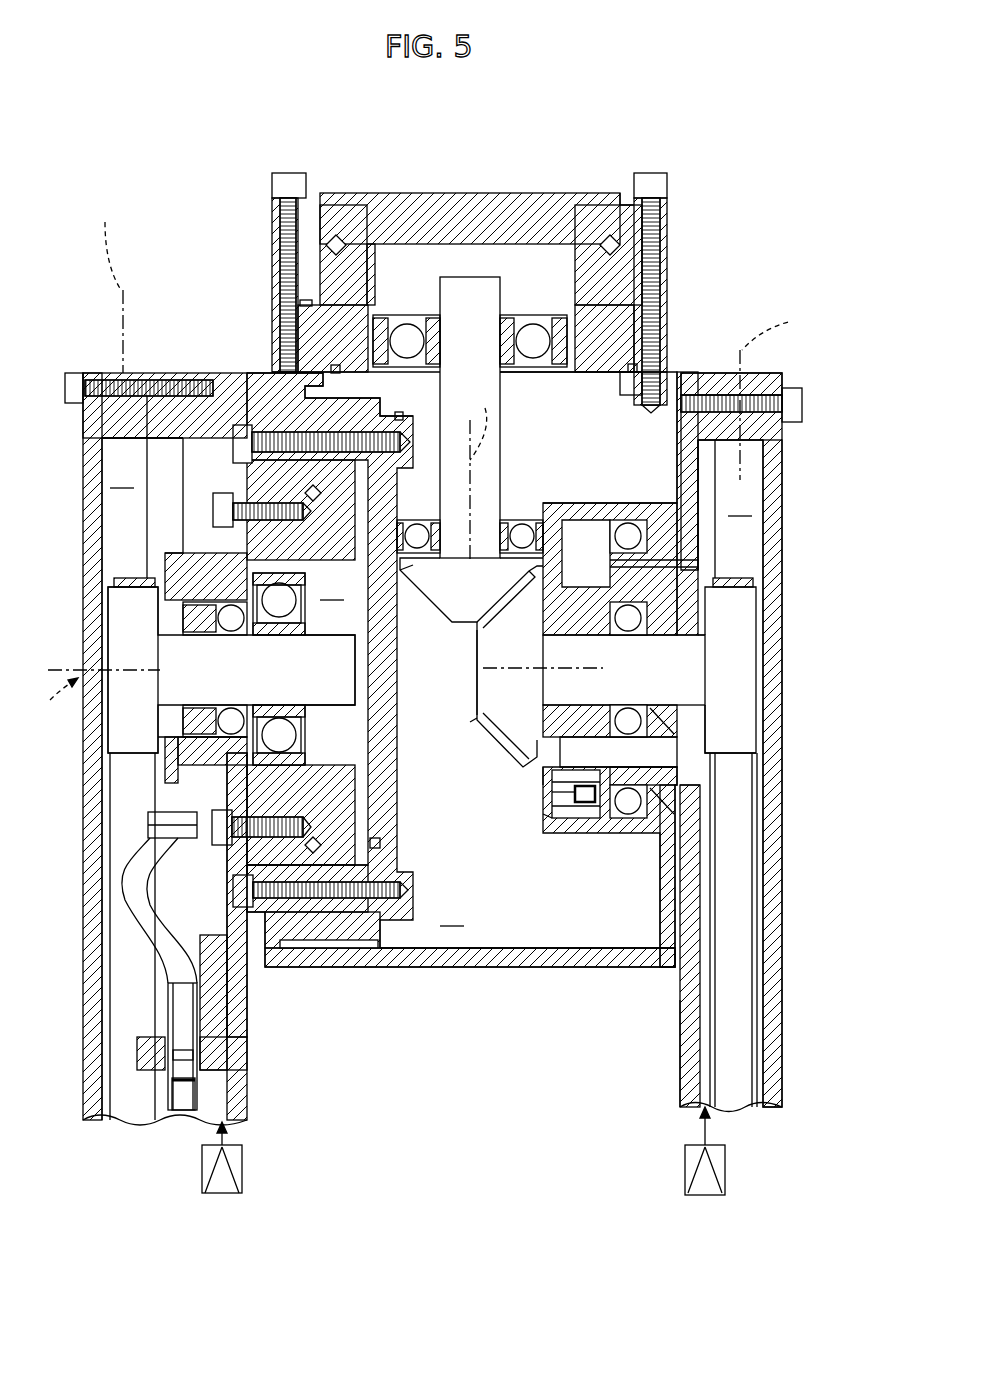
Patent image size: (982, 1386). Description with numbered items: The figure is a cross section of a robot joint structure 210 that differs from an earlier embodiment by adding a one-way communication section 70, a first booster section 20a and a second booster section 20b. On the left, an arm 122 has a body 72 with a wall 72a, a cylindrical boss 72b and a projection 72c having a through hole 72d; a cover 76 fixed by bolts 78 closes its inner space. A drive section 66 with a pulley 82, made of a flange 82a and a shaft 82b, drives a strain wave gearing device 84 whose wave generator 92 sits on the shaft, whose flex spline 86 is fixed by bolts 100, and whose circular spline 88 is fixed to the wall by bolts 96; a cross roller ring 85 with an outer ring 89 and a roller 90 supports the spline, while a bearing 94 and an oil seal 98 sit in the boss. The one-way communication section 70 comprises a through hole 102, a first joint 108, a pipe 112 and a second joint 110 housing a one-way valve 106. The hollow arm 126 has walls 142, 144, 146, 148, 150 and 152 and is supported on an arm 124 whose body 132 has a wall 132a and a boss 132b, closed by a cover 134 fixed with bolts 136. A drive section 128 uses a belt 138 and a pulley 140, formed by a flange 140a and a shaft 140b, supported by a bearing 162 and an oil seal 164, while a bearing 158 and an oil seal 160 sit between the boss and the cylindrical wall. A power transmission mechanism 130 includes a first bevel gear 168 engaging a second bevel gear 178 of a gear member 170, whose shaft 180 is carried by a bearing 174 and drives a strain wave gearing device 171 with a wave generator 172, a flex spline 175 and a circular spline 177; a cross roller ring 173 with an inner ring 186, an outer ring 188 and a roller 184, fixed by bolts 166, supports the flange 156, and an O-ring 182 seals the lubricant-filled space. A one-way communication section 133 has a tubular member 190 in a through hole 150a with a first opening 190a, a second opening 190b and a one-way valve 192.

The joint structure 210 is at (435, 643).
The flange 156 is at (446, 215).
The cross roller ring 173 is at (610, 203).
The bolts 166 is at (288, 178).
The roller 184 is at (285, 235).
The inner ring 186 is at (333, 205).
The outer ring 188 is at (640, 270).
The flex spline 175 is at (374, 300).
The circular spline 177 is at (625, 310).
The strain wave gearing device 171 is at (416, 313).
The wave generator 172 is at (540, 313).
The shaft 180 is at (470, 417).
The bearing 174 is at (417, 530).
The gear member 170 is at (503, 447).
The O-ring 182 is at (330, 365).
The second bevel gear 178 is at (471, 590).
The flex spline 86 is at (403, 566).
The wall 150 is at (528, 582).
The first bevel gear 168 is at (477, 660).
The power transmission mechanism 130 is at (470, 726).
The wall 152 is at (590, 598).
The bearing 158 is at (645, 538).
The bearing 162 is at (632, 622).
The shaft 140b is at (624, 670).
The pulley 140 is at (757, 603).
The flange 140a is at (729, 729).
The oil seal 164 is at (702, 625).
The oil seal 160 is at (662, 798).
The wall 148 is at (580, 830).
The tubular member 190 is at (560, 825).
The first opening 190a is at (552, 792).
The one-way valve 192 is at (560, 797).
The one-way communication section 133 is at (545, 816).
The through hole 150a is at (548, 772).
The second opening 190b is at (628, 808).
The wall 144 is at (716, 462).
The arm 124 is at (781, 703).
The bolts 136 is at (790, 410).
The cover 134 is at (775, 925).
The drive section 128 is at (742, 565).
The body 132 is at (698, 1045).
The wall 132a is at (682, 1040).
The boss 132b is at (702, 772).
The belt 138 is at (740, 868).
The first booster section 20a is at (685, 1172).
The wall 142 is at (390, 822).
The wall 146 is at (458, 968).
The arm 126 is at (522, 965).
The cross roller ring 85 is at (297, 412).
The circular spline 88 is at (301, 662).
The outer ring 89 is at (330, 905).
The roller 90 is at (295, 905).
The bolts 100 is at (258, 425).
The bolts 96 is at (213, 510).
The body 72 is at (186, 372).
The bolts 78 is at (72, 373).
The cover 76 is at (90, 475).
The drive section 66 is at (122, 562).
The boss 72b is at (175, 580).
The oil seal 98 is at (200, 620).
The bearing 94 is at (229, 625).
The strain wave gearing device 84 is at (372, 600).
The wave generator 92 is at (305, 722).
The pulley 82 is at (106, 640).
The flange 82a is at (133, 670).
The shaft 82b is at (330, 670).
The arm 122 is at (170, 742).
The through hole 102 is at (175, 765).
The first joint 108 is at (165, 825).
The pipe 112 is at (135, 890).
The one-way communication section 70 is at (126, 914).
The second joint 110 is at (140, 1030).
The one-way valve 106 is at (180, 1095).
The wall 72a is at (242, 1010).
The through hole 72d is at (245, 1062).
The projection 72c is at (148, 1065).
The second booster section 20b is at (245, 1170).